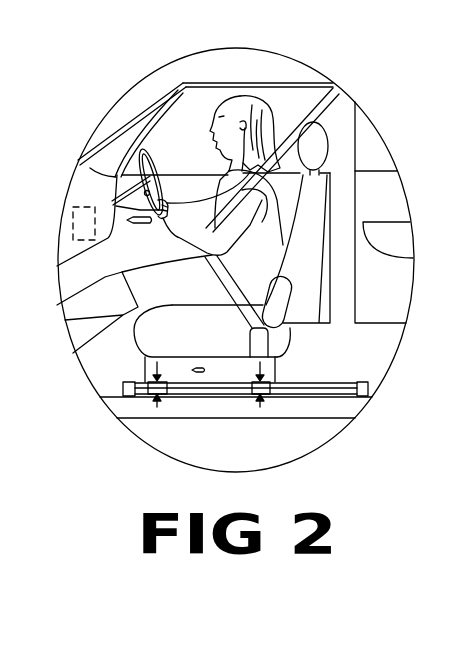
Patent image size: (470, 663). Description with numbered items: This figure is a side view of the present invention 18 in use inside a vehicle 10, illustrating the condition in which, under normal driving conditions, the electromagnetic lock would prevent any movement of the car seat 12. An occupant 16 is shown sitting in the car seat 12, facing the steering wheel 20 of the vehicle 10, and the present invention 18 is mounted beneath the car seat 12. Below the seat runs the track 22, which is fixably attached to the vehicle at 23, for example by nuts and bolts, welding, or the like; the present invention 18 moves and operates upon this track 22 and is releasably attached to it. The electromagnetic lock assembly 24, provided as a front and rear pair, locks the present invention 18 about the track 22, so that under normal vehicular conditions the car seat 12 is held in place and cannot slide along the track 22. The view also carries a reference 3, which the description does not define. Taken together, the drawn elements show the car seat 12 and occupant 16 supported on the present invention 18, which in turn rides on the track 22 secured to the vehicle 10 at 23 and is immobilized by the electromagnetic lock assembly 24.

The vehicle 10 is at (231, 63).
The car seat 12 is at (310, 143).
The occupant 16 is at (238, 120).
The steering wheel 20 is at (146, 150).
The track 22 is at (218, 388).
The attachment to the vehicle 23 is at (122, 396).
The electromagnetic lock assembly 24 is at (265, 385).
The present invention 18 is at (147, 408).
The seat position sensor 3 is at (288, 407).